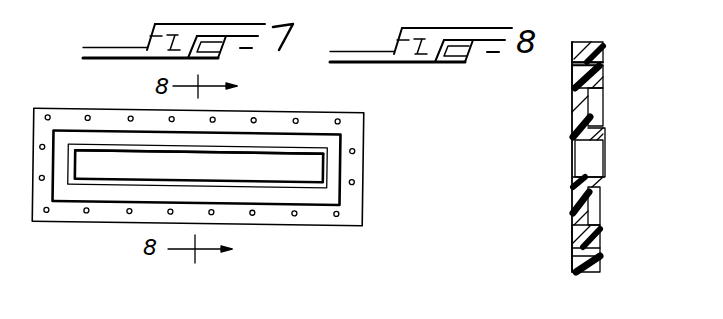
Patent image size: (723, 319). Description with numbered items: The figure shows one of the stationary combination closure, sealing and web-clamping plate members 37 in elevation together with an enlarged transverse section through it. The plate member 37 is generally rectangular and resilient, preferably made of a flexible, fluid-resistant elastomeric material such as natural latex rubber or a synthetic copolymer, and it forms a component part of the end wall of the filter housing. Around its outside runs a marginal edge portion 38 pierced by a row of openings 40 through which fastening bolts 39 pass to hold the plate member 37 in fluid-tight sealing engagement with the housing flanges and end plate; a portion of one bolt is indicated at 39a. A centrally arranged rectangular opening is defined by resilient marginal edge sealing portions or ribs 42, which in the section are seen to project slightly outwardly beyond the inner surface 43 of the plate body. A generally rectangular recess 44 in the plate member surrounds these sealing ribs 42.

In FIG. 8, the sealing plate member 37 is at (577, 216).
In FIG. 8, the marginal edge portion 38 is at (597, 41).
In FIG. 8, the fastening bolts 39 is at (532, 0).
In FIG. 7, the lead portion 39a is at (104, 0).
In FIG. 8, the openings 40 is at (598, 63).
In FIG. 8, the marginal edge sealing ribs 42 is at (602, 186).
In FIG. 8, the inner surface 43 is at (601, 88).
In FIG. 8, the recess 44 is at (604, 106).